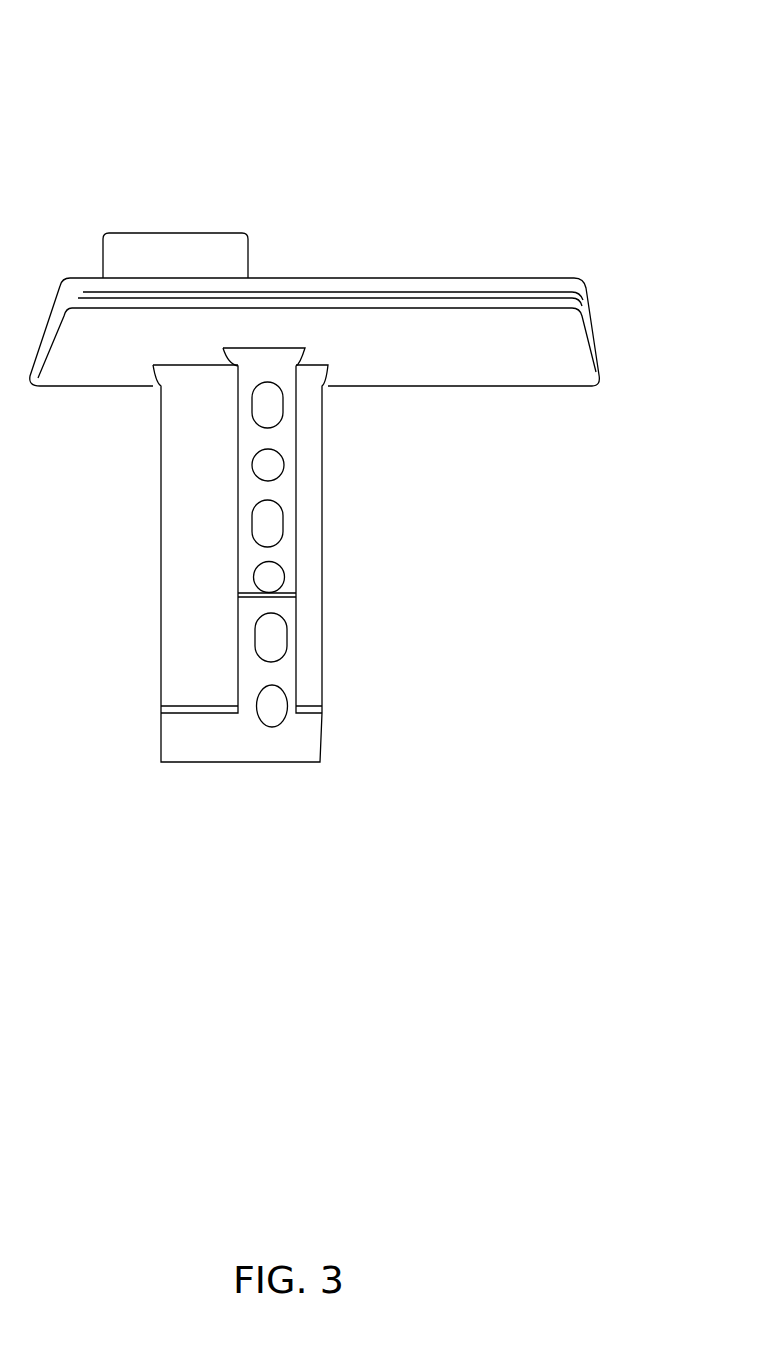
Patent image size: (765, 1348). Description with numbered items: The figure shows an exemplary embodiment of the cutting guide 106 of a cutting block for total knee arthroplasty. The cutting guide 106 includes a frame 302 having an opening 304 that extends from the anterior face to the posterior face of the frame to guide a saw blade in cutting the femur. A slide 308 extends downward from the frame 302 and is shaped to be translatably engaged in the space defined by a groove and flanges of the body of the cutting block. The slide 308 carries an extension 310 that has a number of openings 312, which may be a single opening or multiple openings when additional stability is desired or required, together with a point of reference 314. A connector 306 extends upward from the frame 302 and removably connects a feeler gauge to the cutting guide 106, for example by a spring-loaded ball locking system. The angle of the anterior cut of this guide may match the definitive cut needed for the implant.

The cutting guide 106 is at (590, 78).
The frame 302 is at (553, 372).
The opening 304 is at (553, 292).
The connector 306 is at (205, 253).
The slide 308 is at (217, 760).
The extension 310 is at (284, 666).
The openings 312 is at (284, 462).
The point of reference 314 is at (237, 594).